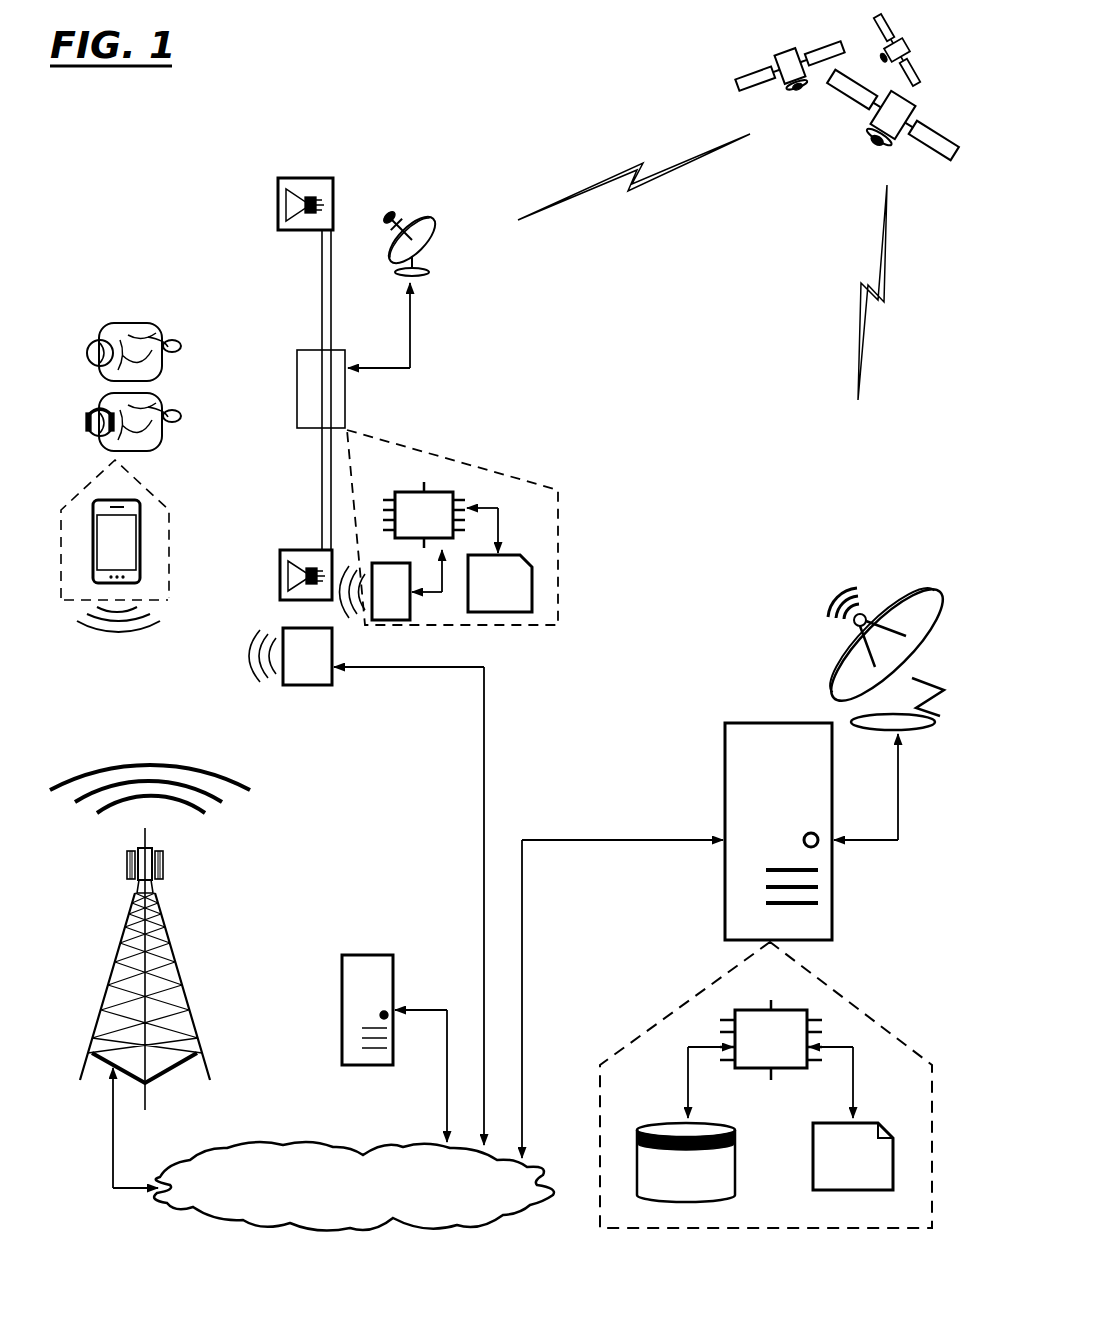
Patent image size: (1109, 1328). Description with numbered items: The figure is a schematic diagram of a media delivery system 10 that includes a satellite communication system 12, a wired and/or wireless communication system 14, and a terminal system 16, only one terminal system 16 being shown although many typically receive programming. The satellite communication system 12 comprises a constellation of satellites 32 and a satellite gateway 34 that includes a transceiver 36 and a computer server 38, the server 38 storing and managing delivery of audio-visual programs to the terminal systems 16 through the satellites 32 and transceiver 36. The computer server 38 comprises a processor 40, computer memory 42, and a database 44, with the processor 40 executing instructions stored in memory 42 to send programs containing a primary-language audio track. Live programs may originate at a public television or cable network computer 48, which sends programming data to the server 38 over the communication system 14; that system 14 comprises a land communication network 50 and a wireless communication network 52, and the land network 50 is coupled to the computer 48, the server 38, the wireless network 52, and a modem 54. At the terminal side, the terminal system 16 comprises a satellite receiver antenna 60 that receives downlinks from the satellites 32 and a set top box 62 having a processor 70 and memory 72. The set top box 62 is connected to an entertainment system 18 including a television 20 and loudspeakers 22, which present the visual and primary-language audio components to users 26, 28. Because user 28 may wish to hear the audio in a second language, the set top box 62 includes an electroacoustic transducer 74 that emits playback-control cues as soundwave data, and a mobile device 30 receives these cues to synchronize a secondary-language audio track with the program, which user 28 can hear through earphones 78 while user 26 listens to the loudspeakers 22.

The media delivery system 10 is at (452, 86).
The satellite communication system 12 is at (792, 288).
The wired and/or wireless communication system 14 is at (256, 1140).
The terminal system 16 is at (351, 410).
The entertainment system 18 is at (281, 176).
The television 20 is at (321, 297).
The loudspeaker 22 is at (278, 220).
The user 26 is at (87, 352).
The user 28 is at (87, 422).
The mobile device 30 is at (115, 546).
The satellite 32 is at (749, 46).
The satellite gateway 34 is at (835, 623).
The transceiver 36 is at (915, 590).
The computer server 38 is at (811, 831).
The processor 40 is at (770, 1059).
The computer memory 42 is at (853, 1156).
The database 44 is at (686, 1162).
The public television and/or cable network computer 48 is at (394, 1048).
The land communication network 50 is at (354, 1186).
The wireless communication network 52 is at (157, 921).
The wired and/or wireless modem 54 is at (366, 886).
The satellite receiver antenna 60 is at (437, 258).
The set top box 62 is at (297, 372).
The processor 70 is at (424, 515).
The memory 72 is at (499, 560).
The electroacoustic transducer 74 is at (391, 585).
The earphones 78 is at (95, 437).